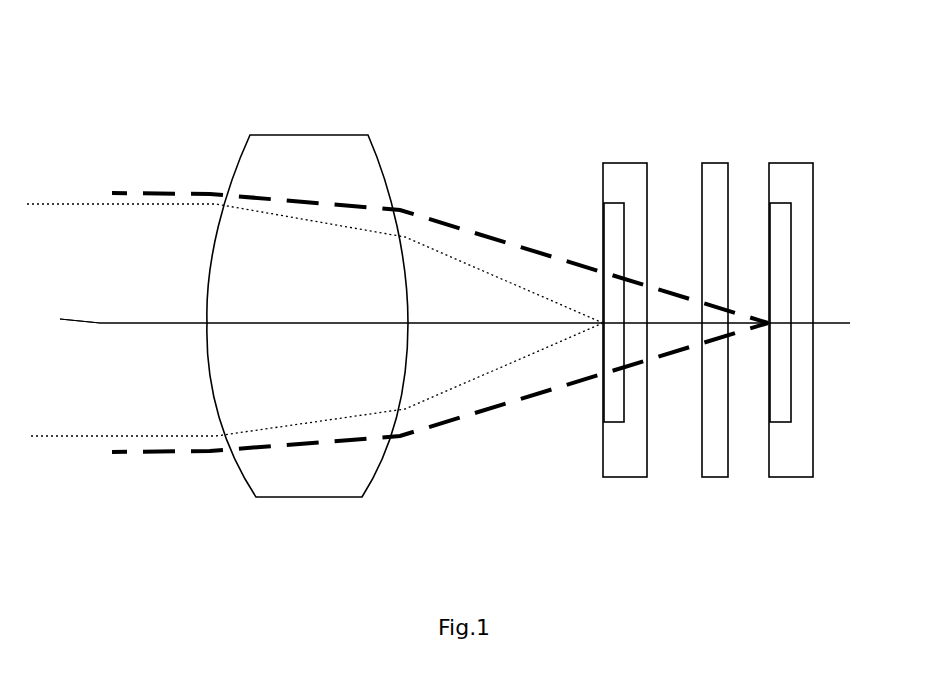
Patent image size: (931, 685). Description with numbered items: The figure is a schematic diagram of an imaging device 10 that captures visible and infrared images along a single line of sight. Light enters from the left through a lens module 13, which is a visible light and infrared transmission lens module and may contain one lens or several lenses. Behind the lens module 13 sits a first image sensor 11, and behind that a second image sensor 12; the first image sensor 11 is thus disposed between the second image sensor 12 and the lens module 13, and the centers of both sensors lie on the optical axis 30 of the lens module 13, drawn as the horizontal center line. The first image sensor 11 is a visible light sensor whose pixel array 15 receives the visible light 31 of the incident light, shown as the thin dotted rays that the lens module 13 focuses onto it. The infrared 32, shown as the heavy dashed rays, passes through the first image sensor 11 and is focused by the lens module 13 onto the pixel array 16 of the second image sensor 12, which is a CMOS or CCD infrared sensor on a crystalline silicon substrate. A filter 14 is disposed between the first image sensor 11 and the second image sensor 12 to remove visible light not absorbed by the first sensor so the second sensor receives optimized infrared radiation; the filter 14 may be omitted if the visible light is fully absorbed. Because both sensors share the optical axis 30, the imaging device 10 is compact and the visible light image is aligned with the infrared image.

The imaging device 10 is at (905, 587).
The first image sensor 11 is at (625, 163).
The second image sensor 12 is at (769, 163).
The lens module 13 is at (318, 135).
The filter 14 is at (727, 477).
The pixel array 15 is at (626, 235).
The pixel array 16 is at (792, 255).
The optical axis 30 is at (100, 323).
The visible light 31 is at (503, 283).
The infrared 32 is at (453, 227).